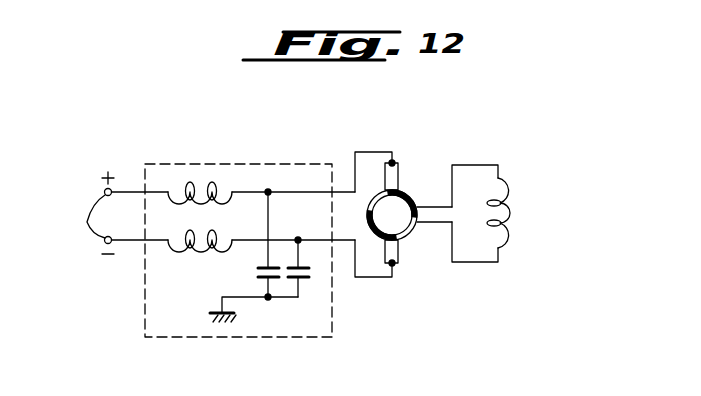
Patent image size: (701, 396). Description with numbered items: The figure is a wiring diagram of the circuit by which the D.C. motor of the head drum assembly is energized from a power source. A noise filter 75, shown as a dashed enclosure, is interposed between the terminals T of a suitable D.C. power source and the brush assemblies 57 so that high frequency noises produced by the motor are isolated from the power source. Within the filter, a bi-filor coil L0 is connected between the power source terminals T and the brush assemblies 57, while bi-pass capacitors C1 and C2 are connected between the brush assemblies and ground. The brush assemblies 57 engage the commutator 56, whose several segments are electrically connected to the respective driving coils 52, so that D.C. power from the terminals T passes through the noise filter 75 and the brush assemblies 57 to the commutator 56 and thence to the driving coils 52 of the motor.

The noise filter 75 is at (233, 164).
The brush assemblies 57 is at (393, 179).
The commutator 56 is at (416, 196).
The driving coils 52 is at (511, 212).
The bi-filor coil L0 is at (204, 213).
The bi-pass capacitor C1 is at (257, 284).
The bi-pass capacitor C2 is at (309, 279).
The terminals T is at (89, 213).